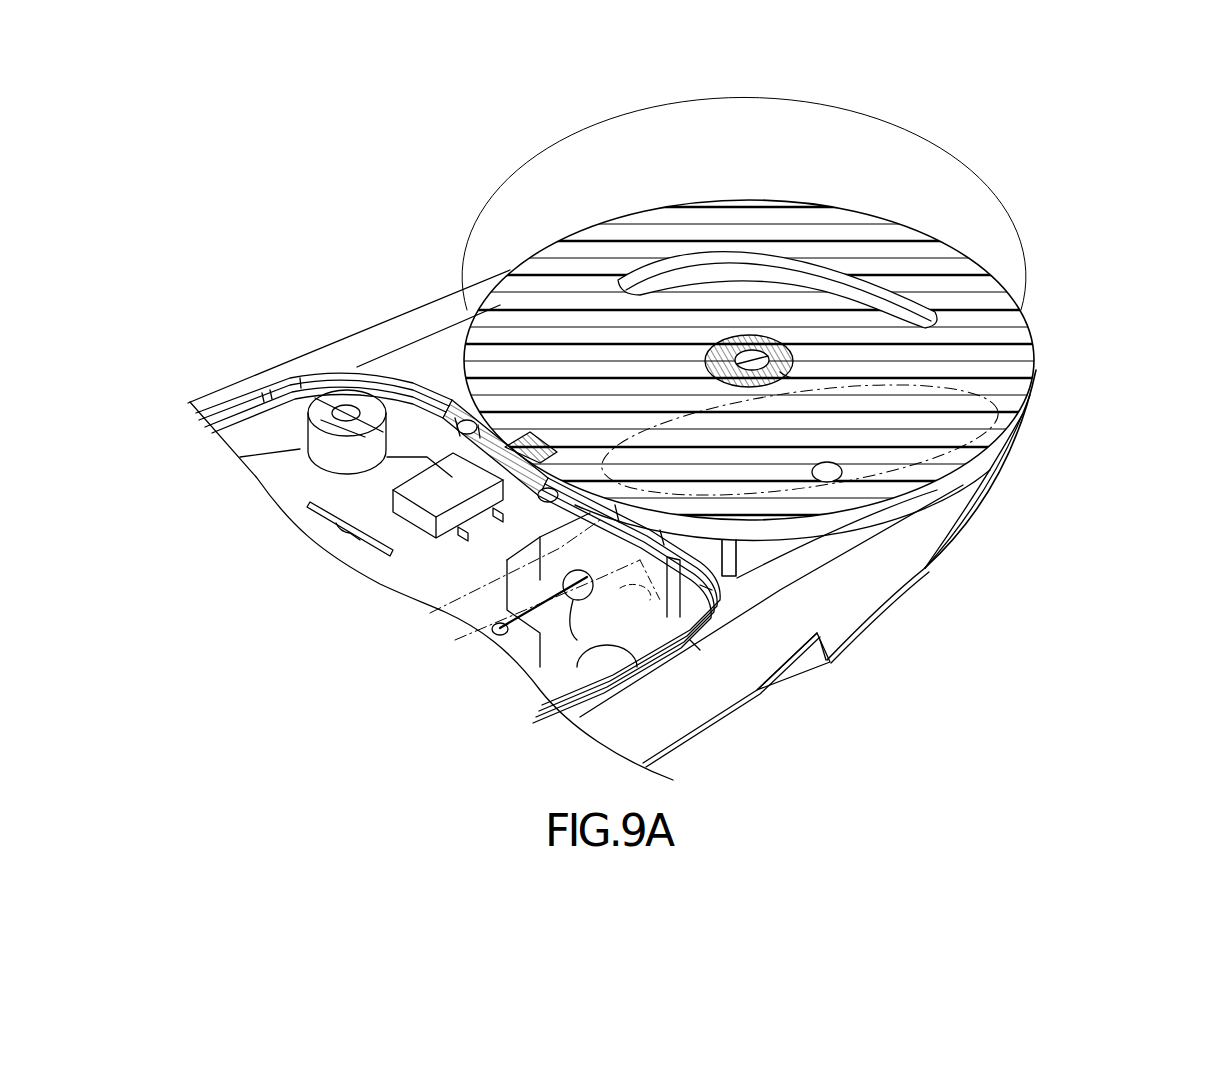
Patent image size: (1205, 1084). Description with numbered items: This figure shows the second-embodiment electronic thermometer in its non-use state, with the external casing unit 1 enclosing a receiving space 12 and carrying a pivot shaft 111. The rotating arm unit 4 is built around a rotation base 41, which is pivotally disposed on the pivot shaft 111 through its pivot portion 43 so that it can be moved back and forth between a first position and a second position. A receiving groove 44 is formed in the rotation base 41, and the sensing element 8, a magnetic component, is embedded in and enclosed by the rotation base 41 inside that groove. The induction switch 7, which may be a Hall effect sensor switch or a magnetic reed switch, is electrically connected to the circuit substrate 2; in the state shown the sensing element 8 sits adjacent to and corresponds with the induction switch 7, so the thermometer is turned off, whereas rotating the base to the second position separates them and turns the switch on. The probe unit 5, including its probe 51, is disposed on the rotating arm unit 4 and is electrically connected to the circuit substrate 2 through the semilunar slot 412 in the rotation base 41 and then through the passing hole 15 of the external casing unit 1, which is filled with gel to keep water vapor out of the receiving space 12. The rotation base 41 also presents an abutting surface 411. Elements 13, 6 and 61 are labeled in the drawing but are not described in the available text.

The external casing unit 1 is at (990, 626).
The pivot shaft 111 is at (790, 377).
The receiving space 12 is at (588, 645).
The side wall 13 is at (870, 577).
The passing hole 15 is at (608, 655).
The circuit substrate 2 is at (258, 463).
The rotating arm unit 4 is at (828, 384).
The rotation base 41 is at (868, 410).
The abutting surface 411 is at (945, 493).
The semilunar slot 412 is at (940, 296).
The pivot portion 43 is at (748, 336).
The receiving groove 44 is at (540, 432).
The probe unit 5 is at (510, 598).
The probe 51 is at (435, 609).
The guide track assembly 6 is at (583, 634).
The guide track 61 is at (545, 705).
The induction switch 7 is at (427, 488).
The sensing element 8 is at (462, 410).